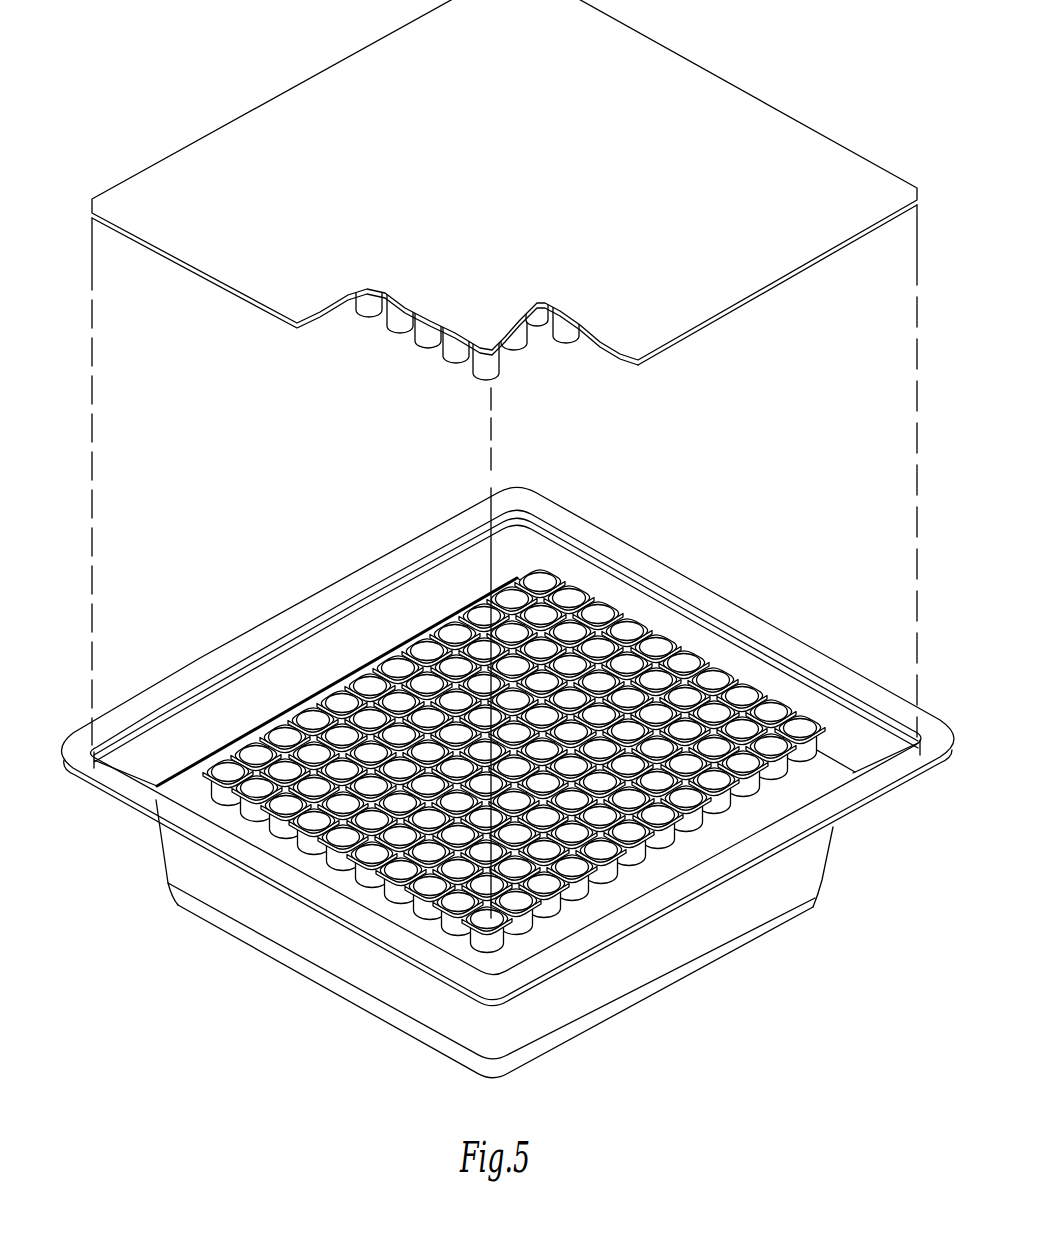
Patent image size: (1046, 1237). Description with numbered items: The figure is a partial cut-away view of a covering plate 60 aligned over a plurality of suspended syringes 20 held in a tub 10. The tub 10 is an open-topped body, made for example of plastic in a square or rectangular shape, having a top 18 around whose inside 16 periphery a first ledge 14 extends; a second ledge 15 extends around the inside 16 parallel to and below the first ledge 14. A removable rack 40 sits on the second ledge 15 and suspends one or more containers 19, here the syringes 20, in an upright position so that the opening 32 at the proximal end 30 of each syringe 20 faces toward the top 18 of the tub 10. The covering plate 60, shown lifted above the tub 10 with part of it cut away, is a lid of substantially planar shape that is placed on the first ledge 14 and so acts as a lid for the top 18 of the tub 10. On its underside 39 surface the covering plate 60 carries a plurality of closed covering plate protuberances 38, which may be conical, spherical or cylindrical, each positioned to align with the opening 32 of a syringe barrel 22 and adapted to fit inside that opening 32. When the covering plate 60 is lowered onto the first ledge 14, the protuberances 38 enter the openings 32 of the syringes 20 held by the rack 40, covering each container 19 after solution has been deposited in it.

The tub 10 is at (185, 873).
The first ledge 14 is at (802, 663).
The second ledge 15 is at (156, 800).
The inside 16 is at (658, 617).
The top 18 is at (932, 766).
The container 19 is at (710, 845).
The syringe 20 is at (250, 815).
The syringe barrel 22 is at (341, 862).
The proximal end 30 is at (425, 897).
The opening 32 is at (592, 897).
The closed covering plate protuberance 38 is at (498, 378).
The underside 39 is at (823, 262).
The removable rack 40 is at (763, 810).
The covering plate 60 is at (504, 206).